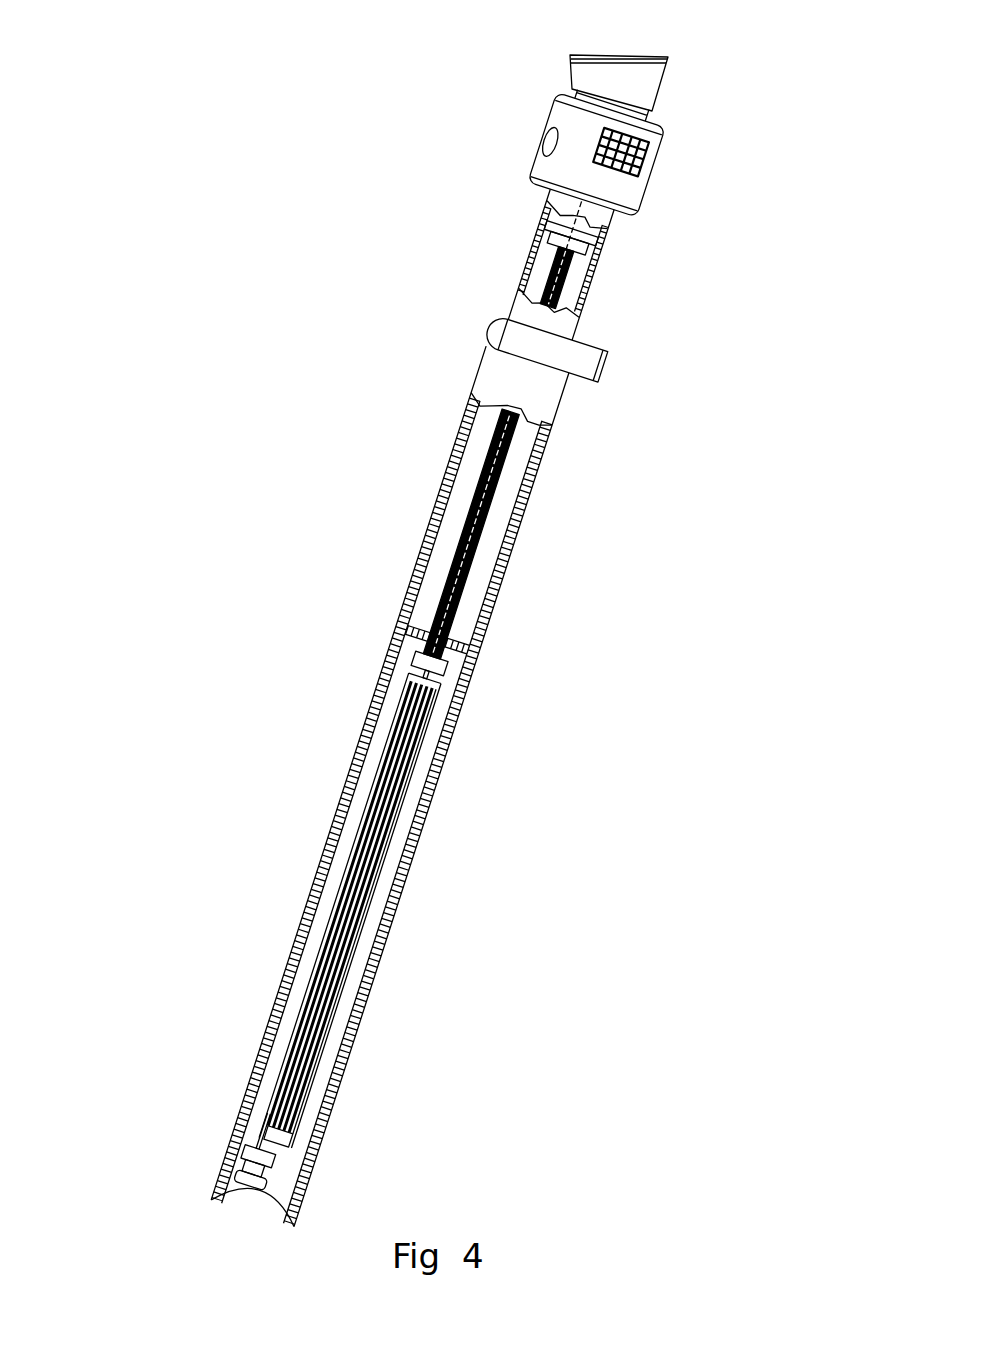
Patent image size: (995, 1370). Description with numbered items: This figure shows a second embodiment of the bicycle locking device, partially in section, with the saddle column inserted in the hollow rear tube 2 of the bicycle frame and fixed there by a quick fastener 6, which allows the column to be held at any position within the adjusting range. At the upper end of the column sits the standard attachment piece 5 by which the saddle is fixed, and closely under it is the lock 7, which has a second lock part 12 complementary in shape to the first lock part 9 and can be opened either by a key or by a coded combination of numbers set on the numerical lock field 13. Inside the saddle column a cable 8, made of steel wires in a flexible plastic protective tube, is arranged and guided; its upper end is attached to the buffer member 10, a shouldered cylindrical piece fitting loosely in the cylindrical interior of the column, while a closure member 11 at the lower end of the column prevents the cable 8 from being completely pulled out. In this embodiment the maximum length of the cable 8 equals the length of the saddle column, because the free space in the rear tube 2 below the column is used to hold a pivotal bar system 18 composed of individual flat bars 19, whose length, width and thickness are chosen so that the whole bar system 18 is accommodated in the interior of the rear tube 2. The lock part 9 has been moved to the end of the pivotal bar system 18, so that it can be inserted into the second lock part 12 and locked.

The attachment piece 5 is at (570, 57).
The second lock part 12 is at (543, 142).
The numerical lock field 13 is at (647, 157).
The lock 7 is at (643, 182).
The buffer member 10 is at (603, 267).
The quick fastener 6 is at (587, 365).
The rear tube 2 is at (332, 833).
The cable 8 is at (473, 568).
The closure member 11 is at (466, 655).
The pivotal bar system 18 is at (383, 918).
The flat bars 19 is at (407, 780).
The lock part 9 is at (245, 1150).